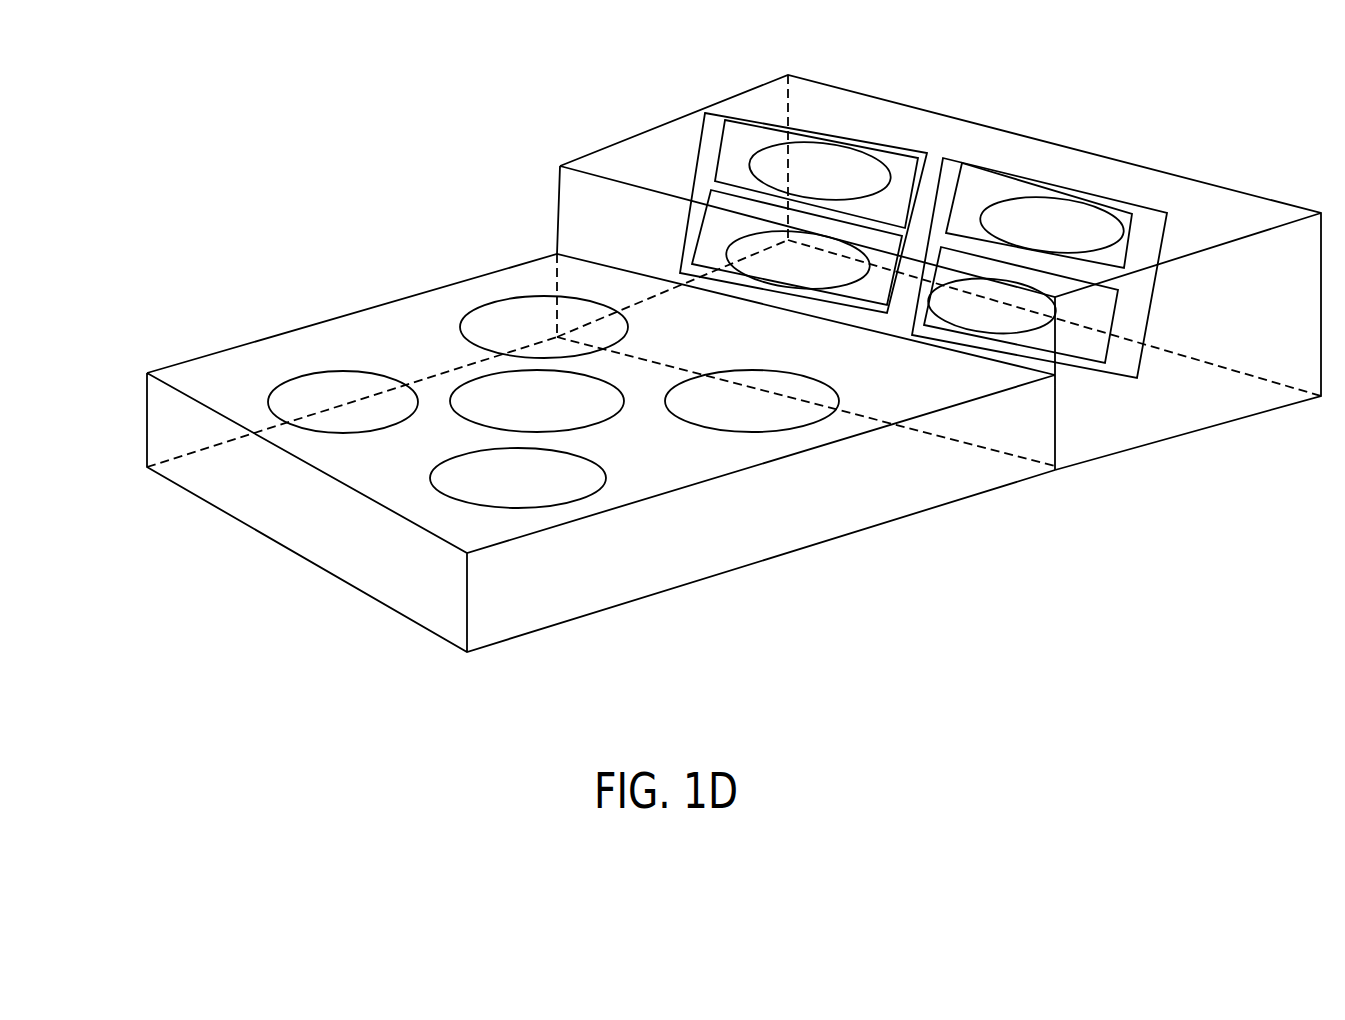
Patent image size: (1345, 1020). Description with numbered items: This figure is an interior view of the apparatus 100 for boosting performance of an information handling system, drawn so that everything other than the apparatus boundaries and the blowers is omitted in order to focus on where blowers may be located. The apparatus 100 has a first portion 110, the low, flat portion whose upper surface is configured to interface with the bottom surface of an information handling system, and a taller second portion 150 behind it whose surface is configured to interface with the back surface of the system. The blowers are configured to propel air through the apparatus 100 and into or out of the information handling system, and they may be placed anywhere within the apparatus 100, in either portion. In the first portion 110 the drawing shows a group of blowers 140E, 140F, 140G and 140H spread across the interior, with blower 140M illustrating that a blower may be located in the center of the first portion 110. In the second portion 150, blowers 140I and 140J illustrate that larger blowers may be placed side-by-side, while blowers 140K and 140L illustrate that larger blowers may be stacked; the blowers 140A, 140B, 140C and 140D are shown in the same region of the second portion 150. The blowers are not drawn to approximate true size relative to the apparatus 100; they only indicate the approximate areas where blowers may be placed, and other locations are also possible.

The apparatus 100 is at (470, 143).
The first portion 110 is at (469, 659).
The second portion 150 is at (1065, 489).
The blower 140A is at (868, 160).
The blower 140B is at (1014, 199).
The blower 140C is at (731, 253).
The blower 140D is at (942, 322).
The blower 140E is at (465, 338).
The blower 140F is at (808, 424).
The blower 140G is at (272, 396).
The blower 140H is at (577, 500).
The blower 140M is at (603, 420).
The blower 140I is at (708, 121).
The blower 140J is at (1140, 210).
The blower 140K is at (945, 159).
The blower 140L is at (1115, 296).